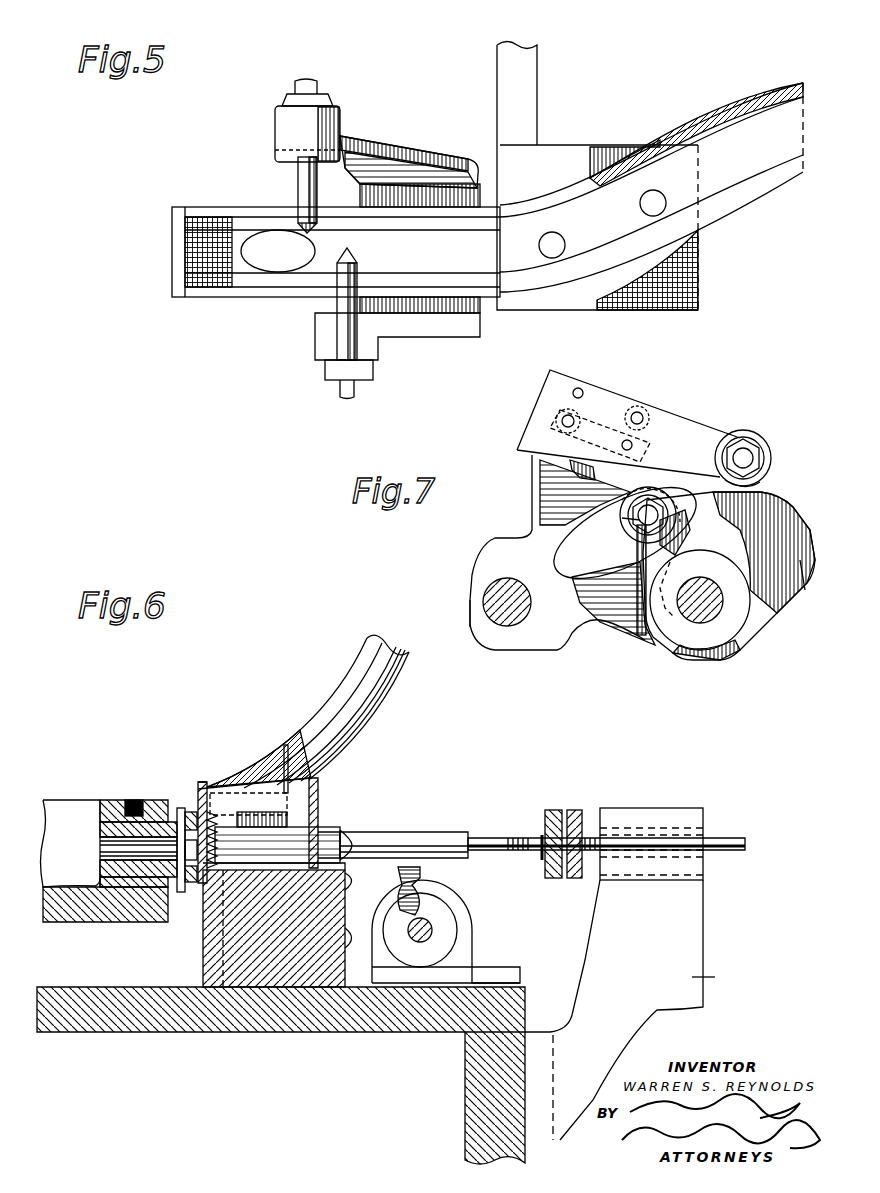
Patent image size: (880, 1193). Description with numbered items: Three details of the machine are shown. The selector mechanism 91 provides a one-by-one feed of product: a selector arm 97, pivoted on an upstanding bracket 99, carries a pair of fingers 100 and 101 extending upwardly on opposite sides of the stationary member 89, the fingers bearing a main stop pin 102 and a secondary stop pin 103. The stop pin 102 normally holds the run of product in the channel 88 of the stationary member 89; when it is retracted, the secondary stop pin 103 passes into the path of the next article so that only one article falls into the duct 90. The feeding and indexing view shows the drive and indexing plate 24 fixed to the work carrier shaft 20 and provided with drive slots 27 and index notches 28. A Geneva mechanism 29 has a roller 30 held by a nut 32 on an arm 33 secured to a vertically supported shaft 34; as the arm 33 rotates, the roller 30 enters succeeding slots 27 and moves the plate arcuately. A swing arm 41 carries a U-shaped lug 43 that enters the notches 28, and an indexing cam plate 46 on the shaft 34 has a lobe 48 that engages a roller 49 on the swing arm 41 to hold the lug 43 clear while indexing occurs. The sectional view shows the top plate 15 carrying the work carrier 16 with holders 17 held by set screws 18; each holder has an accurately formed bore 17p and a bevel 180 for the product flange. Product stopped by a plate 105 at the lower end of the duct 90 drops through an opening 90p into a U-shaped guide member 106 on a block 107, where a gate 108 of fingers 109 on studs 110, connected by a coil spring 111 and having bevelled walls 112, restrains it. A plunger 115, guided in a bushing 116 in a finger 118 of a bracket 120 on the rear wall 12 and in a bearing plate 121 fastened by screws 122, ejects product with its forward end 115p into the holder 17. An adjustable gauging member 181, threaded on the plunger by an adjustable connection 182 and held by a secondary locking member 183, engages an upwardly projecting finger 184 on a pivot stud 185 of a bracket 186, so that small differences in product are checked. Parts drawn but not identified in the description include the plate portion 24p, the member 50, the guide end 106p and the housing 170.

In FIG. 5, the selector mechanism 91 is at (249, 174).
In FIG. 5, the stop pin 102 is at (300, 189).
In FIG. 5, the finger 100 is at (372, 152).
In FIG. 5, the selector arm 97 is at (443, 155).
In FIG. 5, the secondary stop pin 103 is at (336, 303).
In FIG. 5, the finger 101 is at (425, 332).
In FIG. 5, the upstanding bracket 99 is at (530, 113).
In FIG. 5, the channel 88 is at (765, 133).
In FIG. 5, the stationary member 89 is at (750, 198).
In FIG. 7, the drive slots 27 is at (545, 575).
In FIG. 7, the vertical shaft 20 is at (490, 612).
In FIG. 7, the drive and indexing plate 24 is at (515, 640).
In FIG. 7, the index notches 28 is at (583, 465).
In FIG. 7, the swing arm 41 is at (670, 425).
In FIG. 7, the U-shaped lug 43 is at (588, 395).
In FIG. 7, the roller 49 is at (748, 432).
In FIG. 7, the bracket arm end 24p is at (776, 432).
In FIG. 7, the arm 33 is at (683, 522).
In FIG. 7, the roller 30 is at (655, 495).
In FIG. 7, the nut 32 is at (643, 522).
In FIG. 7, the Geneva mechanism 29 is at (612, 538).
In FIG. 7, the cam 50 is at (780, 508).
In FIG. 7, the indexing cam plate 46 is at (740, 640).
In FIG. 7, the vertically supported shaft 34 is at (700, 623).
In FIG. 7, the lobe 48 is at (805, 585).
In FIG. 6, the top plate 15 is at (120, 1035).
In FIG. 6, the rear wall 12 is at (470, 1110).
In FIG. 6, the bracket 120 is at (634, 1010).
In FIG. 6, the finger 118 is at (690, 812).
In FIG. 6, the bushing 116 is at (645, 820).
In FIG. 6, the plunger 115 is at (488, 838).
In FIG. 6, the forward end 115p is at (365, 840).
In FIG. 6, the adjustable gauging member 181 is at (552, 810).
In FIG. 6, the secondary locking member 183 is at (575, 810).
In FIG. 6, the adjustable connection 182 is at (540, 858).
In FIG. 6, the block 107 is at (215, 940).
In FIG. 6, the screws 122 is at (365, 882).
In FIG. 6, the bracket 186 is at (474, 945).
In FIG. 6, the pivot stud 185 is at (430, 923).
In FIG. 6, the upwardly projecting finger 184 is at (420, 874).
In FIG. 6, the plate 105 is at (203, 782).
In FIG. 6, the bearing plate 121 is at (318, 800).
In FIG. 6, the duct 90 is at (395, 700).
In FIG. 6, the opening 90p is at (255, 795).
In FIG. 6, the U-shaped guide member 106 is at (275, 862).
In FIG. 6, the plunger end 106p is at (310, 840).
In FIG. 6, the coil spring 111 is at (230, 856).
In FIG. 6, the work carrier 16 is at (65, 925).
In FIG. 6, the holders 17 is at (103, 827).
In FIG. 6, the bore 17p is at (120, 855).
In FIG. 6, the cover 170 is at (58, 815).
In FIG. 6, the set screws 18 is at (133, 799).
In FIG. 6, the bevel 180 is at (177, 848).
In FIG. 6, the studs 110 is at (180, 808).
In FIG. 6, the fingers 109 is at (192, 810).
In FIG. 6, the bevelled walls 112 is at (195, 883).
In FIG. 6, the gate 108 is at (186, 888).